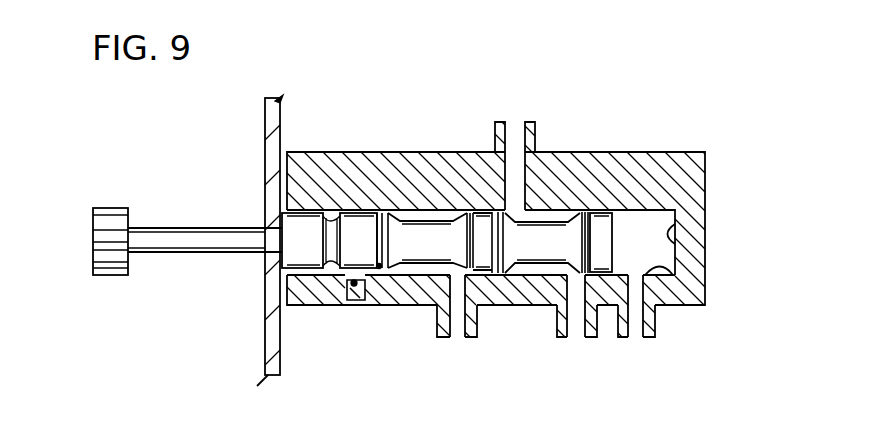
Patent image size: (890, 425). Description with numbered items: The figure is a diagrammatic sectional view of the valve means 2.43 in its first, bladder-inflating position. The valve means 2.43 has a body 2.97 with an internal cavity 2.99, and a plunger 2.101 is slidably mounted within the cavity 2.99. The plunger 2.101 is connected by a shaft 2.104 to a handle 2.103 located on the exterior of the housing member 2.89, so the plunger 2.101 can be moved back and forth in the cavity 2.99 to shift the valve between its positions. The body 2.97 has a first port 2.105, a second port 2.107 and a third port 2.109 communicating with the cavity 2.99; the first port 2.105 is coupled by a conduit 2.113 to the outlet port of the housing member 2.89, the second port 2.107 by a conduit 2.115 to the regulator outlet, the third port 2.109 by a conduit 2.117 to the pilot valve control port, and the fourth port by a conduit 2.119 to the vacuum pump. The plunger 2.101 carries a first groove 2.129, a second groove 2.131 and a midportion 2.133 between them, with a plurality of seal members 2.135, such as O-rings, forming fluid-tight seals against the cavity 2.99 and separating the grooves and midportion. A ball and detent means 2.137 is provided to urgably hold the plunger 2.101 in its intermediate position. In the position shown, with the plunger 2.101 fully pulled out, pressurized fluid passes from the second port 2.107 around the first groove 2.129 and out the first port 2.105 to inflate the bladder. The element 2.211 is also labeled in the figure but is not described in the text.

The valve means 2.43 is at (706, 195).
The housing member 2.89 is at (266, 132).
The body 2.97 is at (306, 152).
The internal cavity 2.99 is at (665, 233).
The plunger 2.101 is at (653, 212).
The handle 2.103 is at (93, 245).
The shaft 2.104 is at (208, 247).
The first port 2.105 is at (520, 123).
The second port 2.107 is at (575, 283).
The third port 2.109 is at (673, 270).
The conduit 2.113 is at (495, 122).
The conduit 2.115 is at (588, 335).
The conduit 2.117 is at (655, 335).
The conduit 2.119 is at (474, 337).
The first groove 2.129 is at (547, 237).
The second groove 2.131 is at (418, 240).
The midportion 2.133 is at (483, 250).
The seal members 2.135 is at (497, 212).
The ball and detent means 2.137 is at (350, 306).
The passage 2.211 is at (445, 292).